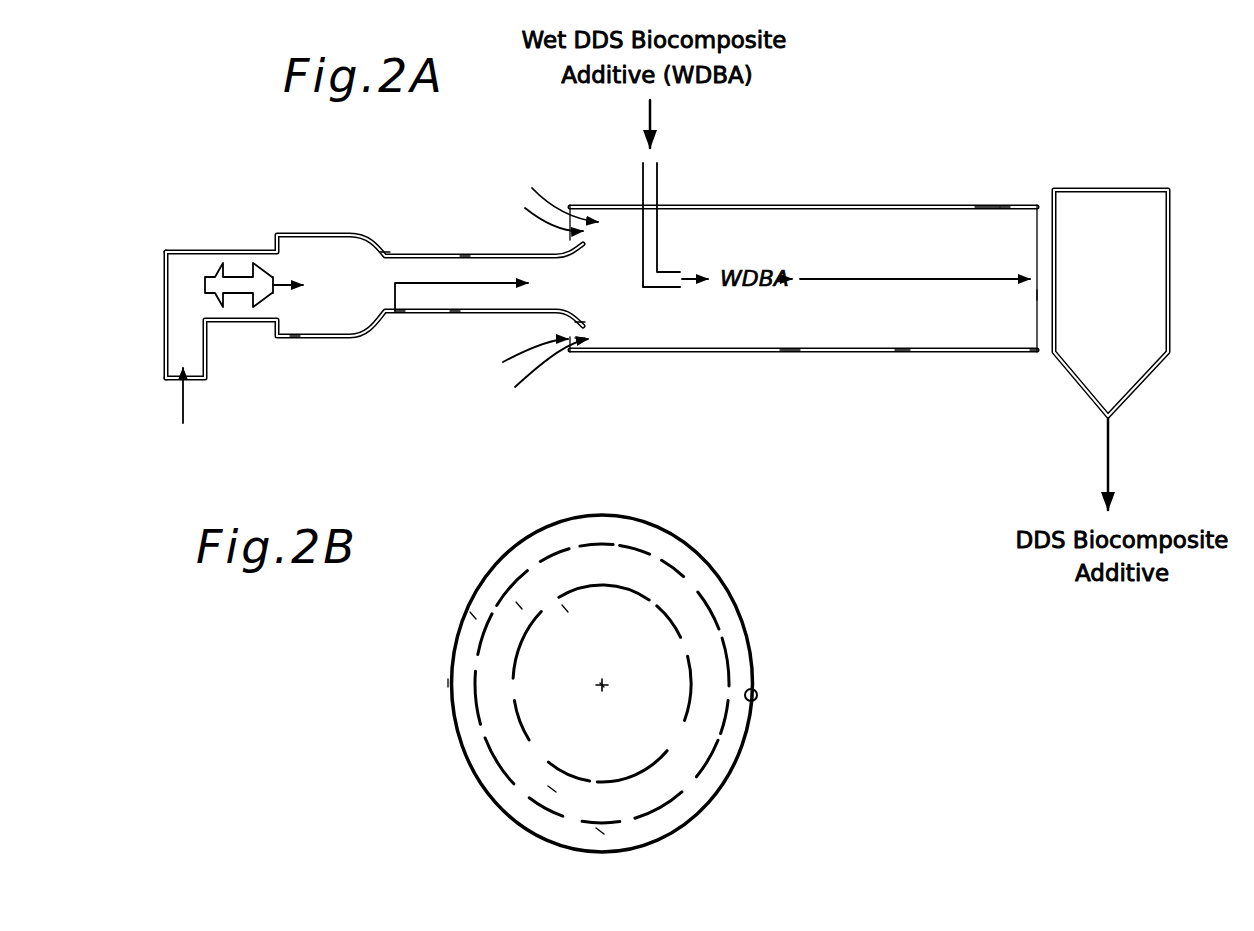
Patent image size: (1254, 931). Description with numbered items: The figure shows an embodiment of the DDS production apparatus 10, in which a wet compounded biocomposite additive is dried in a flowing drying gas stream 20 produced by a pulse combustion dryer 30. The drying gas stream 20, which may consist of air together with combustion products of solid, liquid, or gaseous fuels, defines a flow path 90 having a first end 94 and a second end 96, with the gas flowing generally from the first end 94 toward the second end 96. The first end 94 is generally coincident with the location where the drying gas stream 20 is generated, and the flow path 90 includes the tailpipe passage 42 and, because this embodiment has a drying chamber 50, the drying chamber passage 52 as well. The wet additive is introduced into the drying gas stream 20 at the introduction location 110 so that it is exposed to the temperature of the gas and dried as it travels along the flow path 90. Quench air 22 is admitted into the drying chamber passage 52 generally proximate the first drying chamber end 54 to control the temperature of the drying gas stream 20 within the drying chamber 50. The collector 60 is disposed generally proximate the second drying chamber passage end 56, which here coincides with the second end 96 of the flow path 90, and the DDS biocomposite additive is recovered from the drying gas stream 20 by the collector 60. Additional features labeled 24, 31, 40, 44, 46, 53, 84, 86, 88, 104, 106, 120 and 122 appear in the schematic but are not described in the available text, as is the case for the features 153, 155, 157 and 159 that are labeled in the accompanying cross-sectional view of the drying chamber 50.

In FIG. 2A, the DDS production apparatus 10 is at (1026, 128).
In FIG. 2B, the DDS production apparatus 10 is at (894, 622).
In FIG. 2A, the drying gas stream 20 is at (436, 283).
In FIG. 2B, the drying gas stream 20 is at (560, 718).
In FIG. 2A, the quench air 22 is at (524, 222).
In FIG. 2B, the quench air 22 is at (552, 793).
In FIG. 2A, the air stream 24 is at (535, 186).
In FIG. 2B, the air stream 24 is at (602, 832).
In FIG. 2A, the pulse combustion dryer 30 is at (134, 239).
In FIG. 2B, the pulse combustion dryer 30 is at (428, 690).
In FIG. 2A, the housing 31 is at (295, 338).
In FIG. 2A, the nozzle pipe 40 is at (450, 312).
In FIG. 2A, the tailpipe passage 42 is at (466, 270).
In FIG. 2A, the neck 44 is at (385, 256).
In FIG. 2A, the nozzle outlet flare 46 is at (582, 320).
In FIG. 2A, the drying chamber 50 is at (845, 353).
In FIG. 2B, the drying chamber 50 is at (752, 635).
In FIG. 2A, the drying chamber passage 52 is at (793, 328).
In FIG. 2B, the drying chamber passage 52 is at (664, 548).
In FIG. 2A, the tube port 53 is at (903, 340).
In FIG. 2B, the tube port 53 is at (757, 691).
In FIG. 2A, the first drying chamber end 54 is at (577, 341).
In FIG. 2A, the second drying chamber passage end 56 is at (1033, 353).
In FIG. 2A, the collector 60 is at (1130, 205).
In FIG. 2A, the air flow arrow 84 is at (297, 290).
In FIG. 2A, the air inlet 86 is at (183, 412).
In FIG. 2A, the check valve 88 is at (215, 278).
In FIG. 2A, the flow path 90 is at (462, 284).
In FIG. 2A, the first end 94 is at (400, 312).
In FIG. 2A, the second end 96 is at (993, 227).
In FIG. 2A, the feed tube outlet 104 is at (678, 297).
In FIG. 2A, the lower mixing zone 106 is at (1040, 290).
In FIG. 2A, the introduction location 110 is at (663, 297).
In FIG. 2A, the WDBA feed tube 120 is at (650, 190).
In FIG. 2A, the WDBA flow 122 is at (690, 279).
In FIG. 2A, the central axis / inner zone 153 is at (915, 279).
In FIG. 2B, the central axis / inner zone 153 is at (603, 683).
In FIG. 2B, the inner annular zone 155 is at (568, 612).
In FIG. 2B, the middle annular zone 157 is at (522, 610).
In FIG. 2B, the outer annular zone 159 is at (476, 619).